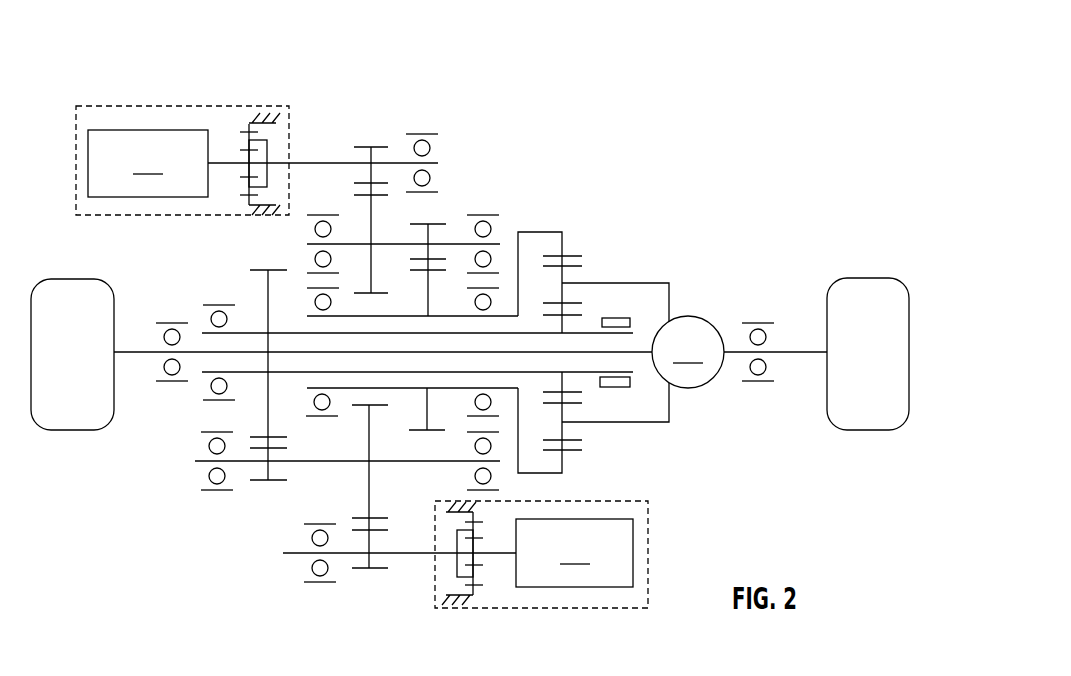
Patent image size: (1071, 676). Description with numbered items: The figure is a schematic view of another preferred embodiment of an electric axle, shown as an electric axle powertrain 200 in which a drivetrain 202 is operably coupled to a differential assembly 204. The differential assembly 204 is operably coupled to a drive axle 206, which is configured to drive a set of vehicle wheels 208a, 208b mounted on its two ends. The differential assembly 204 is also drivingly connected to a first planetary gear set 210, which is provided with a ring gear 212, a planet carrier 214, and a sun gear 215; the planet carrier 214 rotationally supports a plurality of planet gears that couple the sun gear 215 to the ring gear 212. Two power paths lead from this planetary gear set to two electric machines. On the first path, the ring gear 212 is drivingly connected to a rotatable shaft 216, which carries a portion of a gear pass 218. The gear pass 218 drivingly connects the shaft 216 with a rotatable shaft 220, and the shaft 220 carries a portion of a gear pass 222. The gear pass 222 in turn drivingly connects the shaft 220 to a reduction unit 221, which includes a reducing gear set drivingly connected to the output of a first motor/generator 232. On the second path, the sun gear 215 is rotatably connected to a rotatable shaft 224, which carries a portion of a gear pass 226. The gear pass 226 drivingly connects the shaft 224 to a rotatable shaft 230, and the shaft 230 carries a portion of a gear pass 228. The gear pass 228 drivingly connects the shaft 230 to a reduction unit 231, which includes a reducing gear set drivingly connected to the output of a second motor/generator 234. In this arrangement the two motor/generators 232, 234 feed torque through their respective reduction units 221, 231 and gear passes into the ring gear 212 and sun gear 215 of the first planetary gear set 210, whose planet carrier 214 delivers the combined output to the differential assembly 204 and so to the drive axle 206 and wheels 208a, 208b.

The electric axle powertrain 200 is at (742, 80).
The drivetrain 202 is at (495, 118).
The differential assembly 204 is at (688, 352).
The drive axle 206 is at (127, 355).
The vehicle wheel 208a is at (866, 278).
The vehicle wheel 208b is at (70, 279).
The first planetary gear set 210 is at (565, 212).
The ring gear 212 is at (572, 252).
The planet carrier 214 is at (565, 275).
The sun gear 215 is at (578, 314).
The rotatable shaft 216 is at (393, 314).
The gear pass 218 is at (440, 212).
The rotatable shaft 220 is at (385, 242).
The reduction unit 221 is at (300, 130).
The gear pass 222 is at (383, 145).
The rotatable shaft 224 is at (587, 372).
The gear pass 226 is at (258, 490).
The gear pass 228 is at (356, 580).
The rotatable shaft 230 is at (308, 475).
The reduction unit 231 is at (435, 587).
The first motor/generator 232 is at (148, 163).
The second motor/generator 234 is at (574, 553).